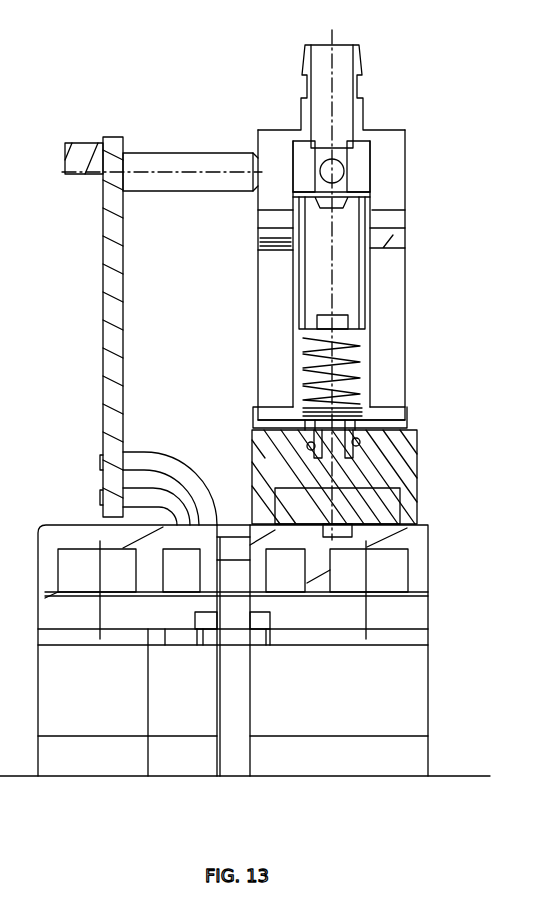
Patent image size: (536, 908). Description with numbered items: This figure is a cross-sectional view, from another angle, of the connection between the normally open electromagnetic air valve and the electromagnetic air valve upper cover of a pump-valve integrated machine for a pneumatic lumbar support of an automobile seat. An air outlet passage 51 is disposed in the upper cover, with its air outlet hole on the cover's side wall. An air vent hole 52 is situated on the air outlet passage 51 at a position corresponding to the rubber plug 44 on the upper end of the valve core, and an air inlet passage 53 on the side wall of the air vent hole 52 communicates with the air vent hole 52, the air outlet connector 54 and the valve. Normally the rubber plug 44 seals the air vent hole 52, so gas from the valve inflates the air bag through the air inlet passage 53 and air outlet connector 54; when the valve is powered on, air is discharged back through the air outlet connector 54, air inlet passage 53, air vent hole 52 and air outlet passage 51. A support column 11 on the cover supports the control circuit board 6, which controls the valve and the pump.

The control circuit board 6 is at (103, 322).
The support column 11 is at (178, 163).
The rubber plug 44 is at (352, 203).
The air outlet passage 51 is at (312, 158).
The air vent hole 52 is at (338, 192).
The air inlet passage 53 is at (322, 165).
The air outlet connector 54 is at (342, 83).